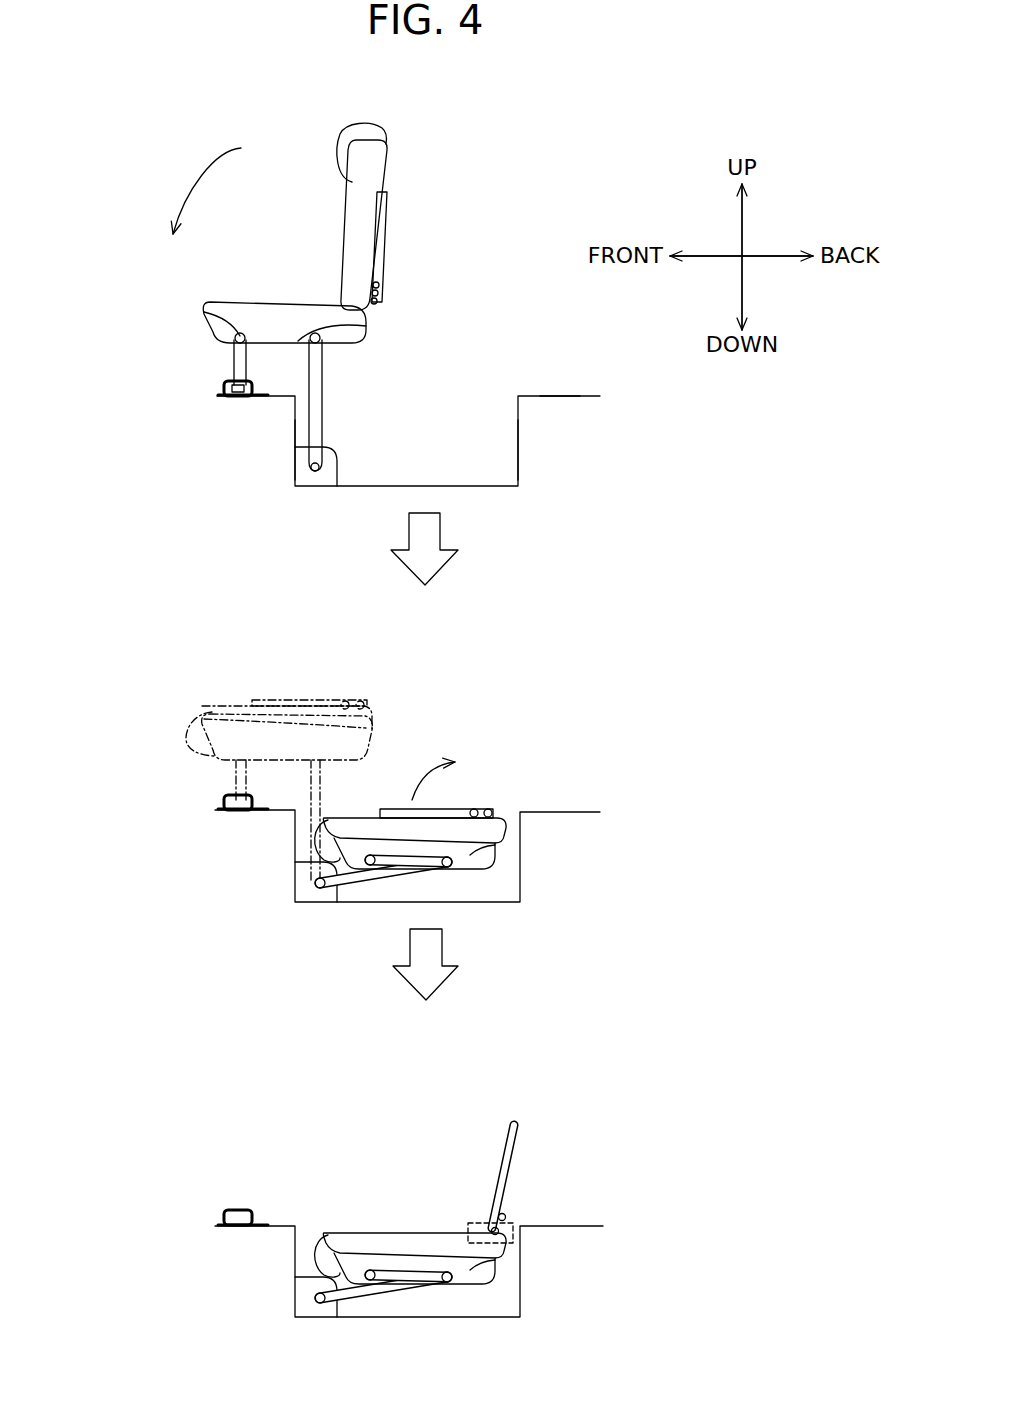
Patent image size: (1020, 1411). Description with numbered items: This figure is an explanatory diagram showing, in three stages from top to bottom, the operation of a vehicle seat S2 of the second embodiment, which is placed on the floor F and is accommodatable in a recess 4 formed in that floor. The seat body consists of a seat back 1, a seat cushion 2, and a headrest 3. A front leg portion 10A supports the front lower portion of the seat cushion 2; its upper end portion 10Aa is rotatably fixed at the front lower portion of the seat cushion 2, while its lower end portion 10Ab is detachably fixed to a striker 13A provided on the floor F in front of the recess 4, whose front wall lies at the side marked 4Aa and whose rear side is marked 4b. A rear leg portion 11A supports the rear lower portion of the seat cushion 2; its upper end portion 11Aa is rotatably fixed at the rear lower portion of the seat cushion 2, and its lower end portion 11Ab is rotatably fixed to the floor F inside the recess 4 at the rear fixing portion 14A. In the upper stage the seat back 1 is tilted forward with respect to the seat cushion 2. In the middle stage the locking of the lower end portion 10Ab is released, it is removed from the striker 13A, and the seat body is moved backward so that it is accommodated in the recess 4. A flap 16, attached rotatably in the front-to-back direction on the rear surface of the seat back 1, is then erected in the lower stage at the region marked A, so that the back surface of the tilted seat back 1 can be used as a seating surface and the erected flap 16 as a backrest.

The seat back 1 is at (356, 232).
The seat cushion 2 is at (236, 301).
The headrest 3 is at (352, 130).
The recess 4 is at (486, 890).
The rear floor wall 4b is at (530, 436).
The front pit wall 4Aa is at (283, 447).
The front leg portion 10A is at (238, 358).
The upper end portion 10Aa is at (212, 306).
The lower end portion 10Ab is at (228, 393).
The rear leg portion 11A is at (320, 395).
The upper end portion 11Aa is at (330, 326).
The lower end portion 11Ab is at (322, 466).
The striker 13A is at (250, 398).
The rear fixing portion 14A is at (305, 497).
The flap 16 is at (386, 240).
The engagement region A is at (478, 1220).
The floor F is at (558, 396).
The vehicle seat S2 is at (130, 200).